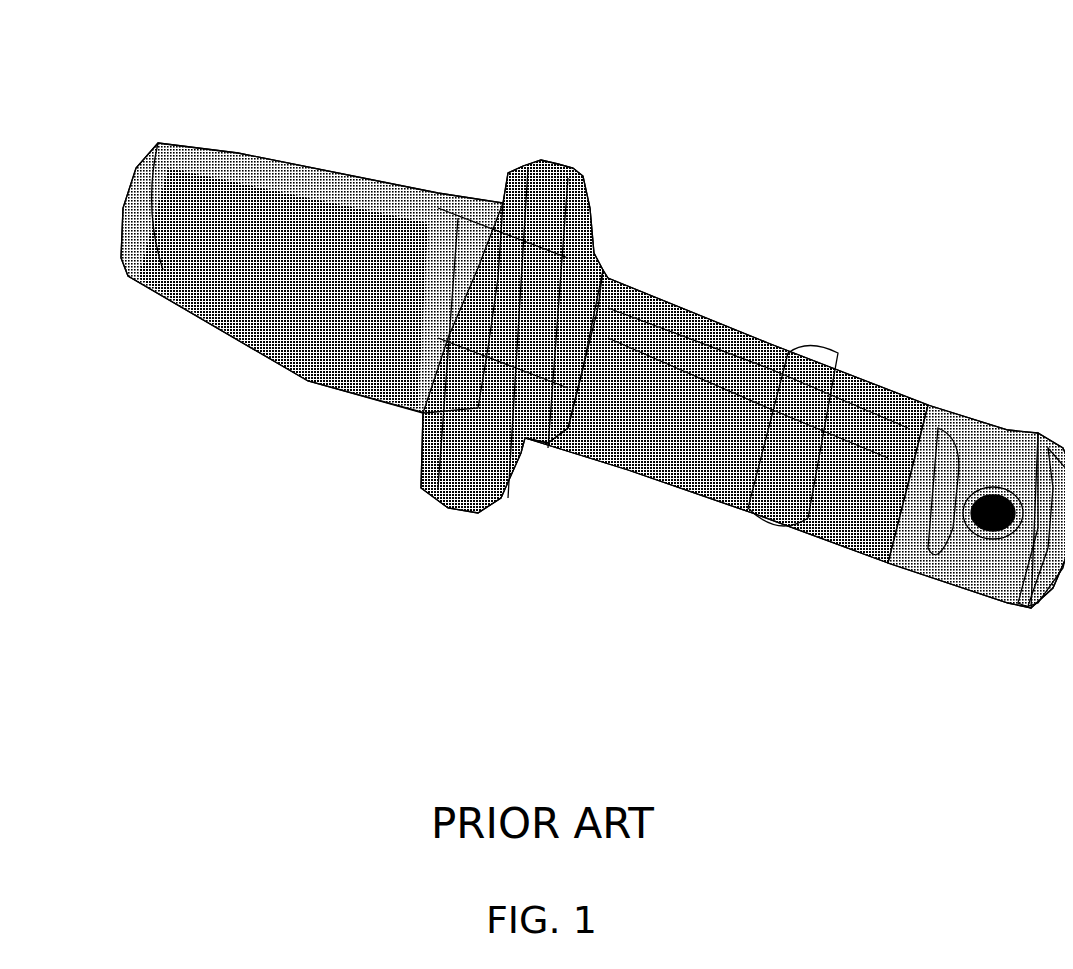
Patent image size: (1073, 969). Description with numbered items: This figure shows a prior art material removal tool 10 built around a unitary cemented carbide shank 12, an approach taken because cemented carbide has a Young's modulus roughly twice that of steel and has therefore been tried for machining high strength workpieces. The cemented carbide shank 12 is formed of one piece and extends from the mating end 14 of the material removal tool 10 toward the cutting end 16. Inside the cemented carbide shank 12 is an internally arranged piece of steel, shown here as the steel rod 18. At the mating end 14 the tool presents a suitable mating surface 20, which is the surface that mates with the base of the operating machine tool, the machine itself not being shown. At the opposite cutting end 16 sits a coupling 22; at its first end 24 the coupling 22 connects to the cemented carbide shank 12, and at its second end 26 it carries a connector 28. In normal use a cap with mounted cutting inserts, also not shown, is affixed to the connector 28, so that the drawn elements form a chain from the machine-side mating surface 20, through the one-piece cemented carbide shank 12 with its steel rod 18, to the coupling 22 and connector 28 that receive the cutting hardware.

The material removal tool 10 is at (616, 106).
The cemented carbide shank 12 is at (668, 312).
The mating end 14 is at (118, 138).
The cutting end 16 is at (1046, 558).
The steel rod 18 is at (432, 285).
The mating surface 20 is at (230, 310).
The coupling 22 is at (931, 405).
The first end 24 is at (826, 332).
The second end 26 is at (1021, 416).
The connector 28 is at (1005, 540).